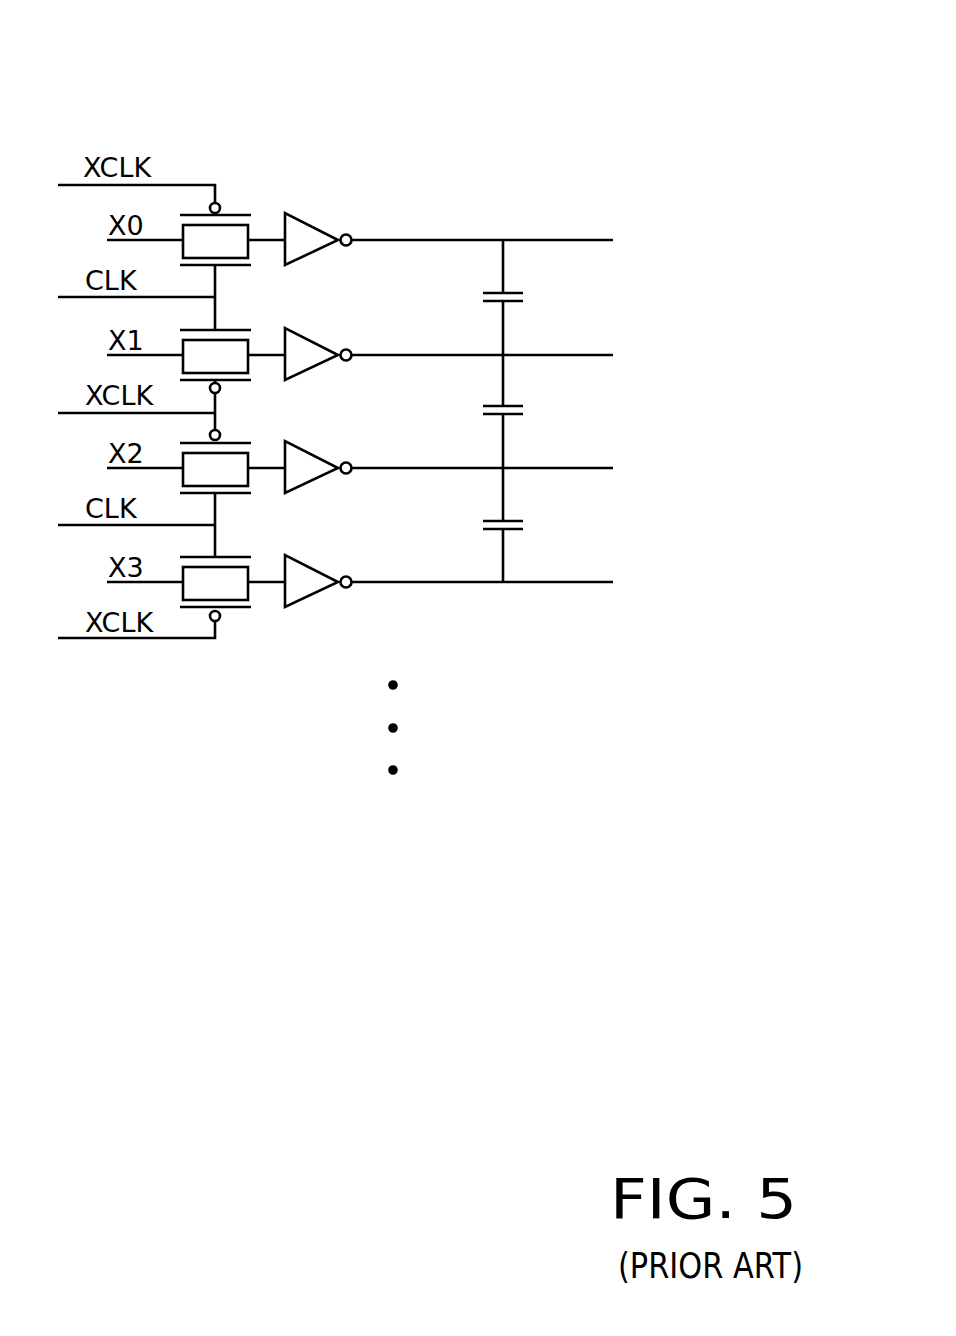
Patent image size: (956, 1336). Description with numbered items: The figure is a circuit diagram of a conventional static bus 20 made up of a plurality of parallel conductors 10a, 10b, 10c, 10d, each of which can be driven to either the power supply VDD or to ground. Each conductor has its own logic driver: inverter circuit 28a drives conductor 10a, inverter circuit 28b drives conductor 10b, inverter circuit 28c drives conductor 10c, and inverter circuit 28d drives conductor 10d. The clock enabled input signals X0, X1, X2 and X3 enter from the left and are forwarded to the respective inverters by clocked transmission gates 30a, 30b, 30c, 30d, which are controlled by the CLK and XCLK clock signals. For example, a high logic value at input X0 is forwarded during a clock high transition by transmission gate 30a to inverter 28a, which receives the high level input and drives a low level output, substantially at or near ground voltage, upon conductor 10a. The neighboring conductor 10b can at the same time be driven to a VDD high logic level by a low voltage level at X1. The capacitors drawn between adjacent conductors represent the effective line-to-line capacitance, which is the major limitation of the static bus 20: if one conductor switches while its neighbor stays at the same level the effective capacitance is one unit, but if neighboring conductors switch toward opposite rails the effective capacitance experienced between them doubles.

The static bus 20 is at (548, 37).
The clocked transmission gate 30a is at (247, 227).
The clocked transmission gate 30b is at (247, 342).
The clocked transmission gate 30c is at (247, 455).
The clocked transmission gate 30d is at (247, 569).
The inverter circuit 28a is at (317, 225).
The inverter circuit 28b is at (317, 340).
The inverter circuit 28c is at (317, 453).
The inverter circuit 28d is at (317, 567).
The conductor 10a is at (580, 236).
The conductor 10b is at (580, 351).
The conductor 10c is at (580, 464).
The conductor 10d is at (580, 578).